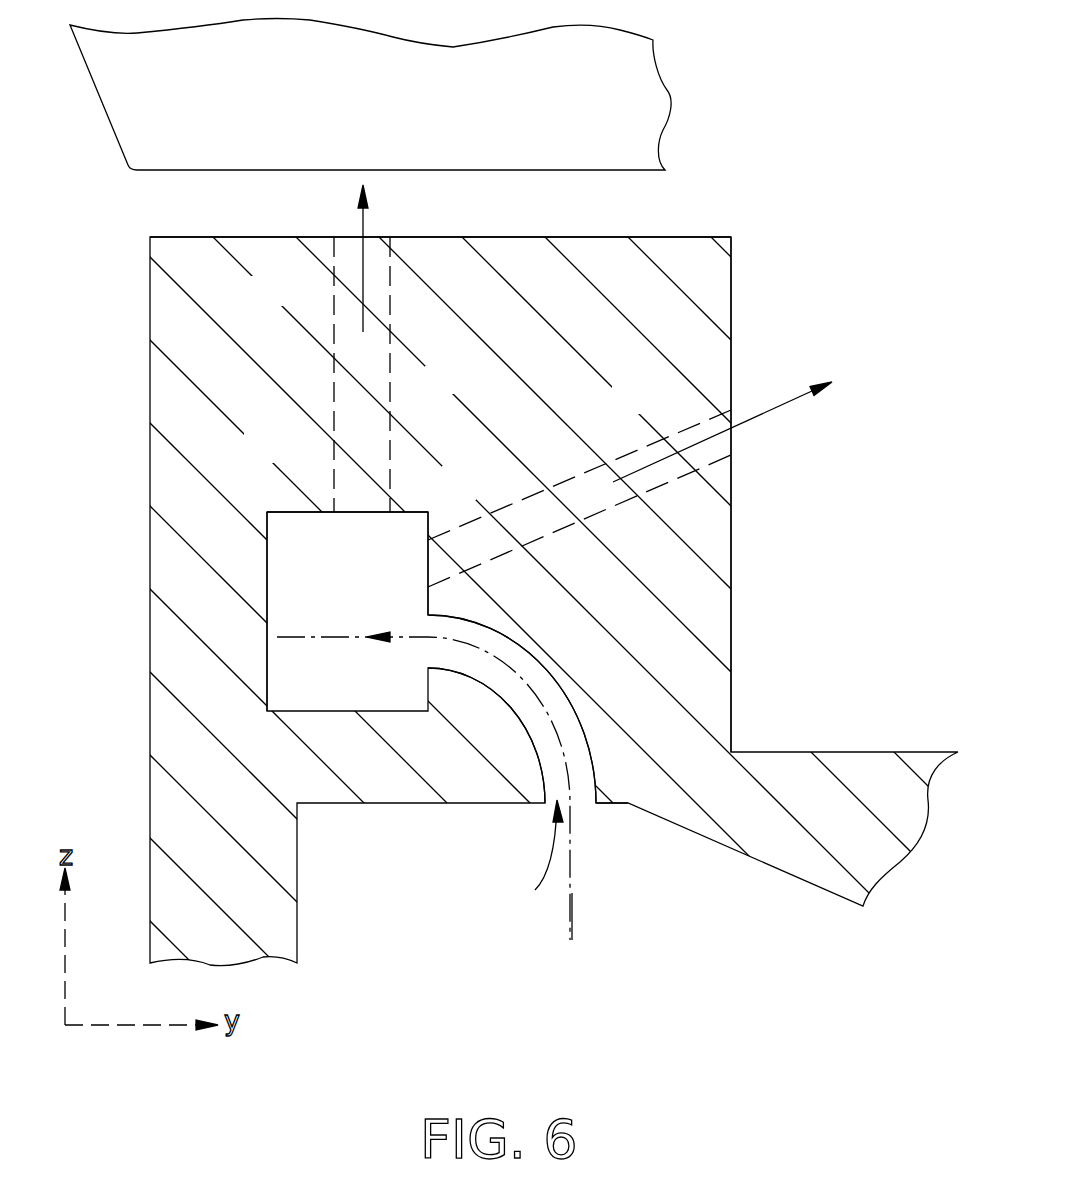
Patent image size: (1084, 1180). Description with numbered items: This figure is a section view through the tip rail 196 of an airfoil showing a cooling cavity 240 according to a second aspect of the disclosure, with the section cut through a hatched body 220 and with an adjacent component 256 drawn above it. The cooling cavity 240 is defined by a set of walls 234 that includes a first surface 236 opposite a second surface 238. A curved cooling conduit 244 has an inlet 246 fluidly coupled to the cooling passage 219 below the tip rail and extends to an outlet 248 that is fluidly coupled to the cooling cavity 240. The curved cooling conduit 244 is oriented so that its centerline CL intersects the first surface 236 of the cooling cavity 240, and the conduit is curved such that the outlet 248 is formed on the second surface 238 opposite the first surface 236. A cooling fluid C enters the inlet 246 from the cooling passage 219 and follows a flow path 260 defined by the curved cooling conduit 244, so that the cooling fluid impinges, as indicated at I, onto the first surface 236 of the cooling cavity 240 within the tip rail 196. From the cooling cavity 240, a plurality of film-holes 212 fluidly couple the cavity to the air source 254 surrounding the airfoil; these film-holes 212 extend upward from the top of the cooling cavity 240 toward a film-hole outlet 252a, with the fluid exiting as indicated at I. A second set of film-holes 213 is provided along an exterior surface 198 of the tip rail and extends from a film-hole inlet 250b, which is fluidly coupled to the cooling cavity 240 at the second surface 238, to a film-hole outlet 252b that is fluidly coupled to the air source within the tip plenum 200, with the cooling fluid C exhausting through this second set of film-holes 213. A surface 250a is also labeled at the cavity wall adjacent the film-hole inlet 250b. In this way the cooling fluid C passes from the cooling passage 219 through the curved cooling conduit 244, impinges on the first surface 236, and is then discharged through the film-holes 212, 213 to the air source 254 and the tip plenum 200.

The tip rail 196 is at (195, 280).
The exterior surface 198 is at (735, 300).
The tip plenum 200 is at (955, 429).
The film-holes 212 is at (375, 393).
The second set of film-holes 213 is at (683, 440).
The cooling passage 219 is at (440, 929).
The body 220 is at (145, 738).
The set of walls 234 is at (278, 545).
The first surface 236 is at (268, 622).
The second surface 238 is at (428, 537).
The cooling cavity 240 is at (343, 697).
The curved cooling conduit 244 is at (558, 720).
The inlet 246 is at (585, 800).
The outlet 248 is at (428, 632).
The first surface 250a is at (340, 513).
The film-hole inlet 250b is at (428, 566).
The first passage 252a is at (375, 237).
The film-hole outlet 252b is at (733, 440).
The air source 254 is at (108, 399).
The component 256 is at (295, 144).
The flow path 260 is at (540, 680).
The cooling fluid C is at (793, 397).
The impinging I is at (363, 283).
The centerline CL is at (572, 918).